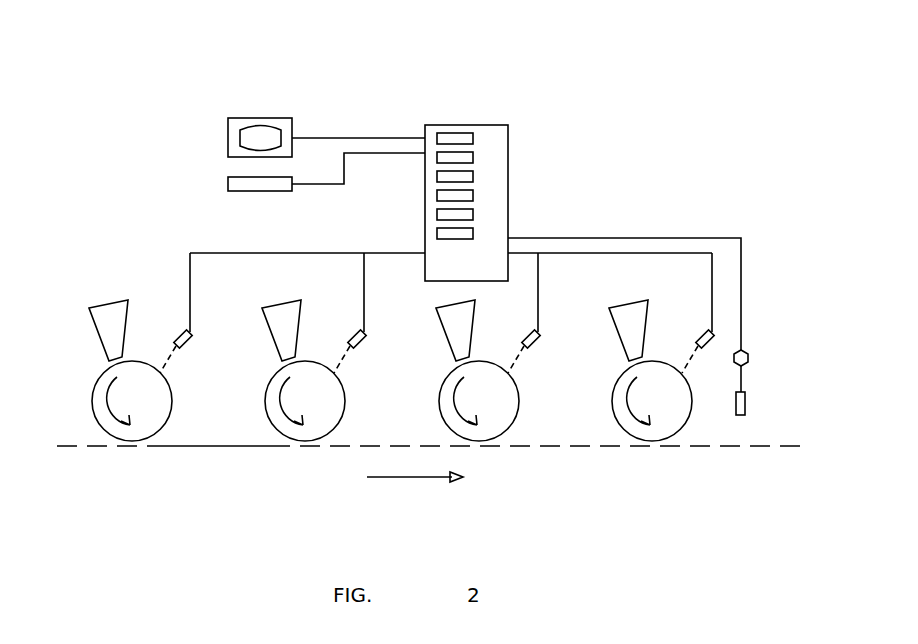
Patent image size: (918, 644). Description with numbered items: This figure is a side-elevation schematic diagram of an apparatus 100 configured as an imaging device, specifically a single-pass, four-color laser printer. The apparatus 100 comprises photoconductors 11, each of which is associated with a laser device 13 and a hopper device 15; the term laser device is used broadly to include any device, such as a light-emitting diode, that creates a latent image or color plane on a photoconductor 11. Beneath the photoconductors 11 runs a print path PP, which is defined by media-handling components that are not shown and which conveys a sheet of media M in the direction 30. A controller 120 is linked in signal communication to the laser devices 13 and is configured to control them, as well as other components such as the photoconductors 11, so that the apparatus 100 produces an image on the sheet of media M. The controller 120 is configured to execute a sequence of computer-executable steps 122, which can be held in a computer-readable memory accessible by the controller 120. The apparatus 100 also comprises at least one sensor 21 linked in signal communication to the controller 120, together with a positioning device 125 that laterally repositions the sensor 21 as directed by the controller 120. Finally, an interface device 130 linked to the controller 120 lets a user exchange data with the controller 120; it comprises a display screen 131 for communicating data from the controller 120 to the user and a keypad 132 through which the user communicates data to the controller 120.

The apparatus 100 is at (698, 183).
The controller 120 is at (462, 203).
The sequence of computer-executable steps 122 is at (437, 158).
The interface device 130 is at (228, 138).
The display screen 131 is at (236, 118).
The keypad 132 is at (228, 184).
The photoconductor 11 is at (93, 405).
The laser device 13 is at (181, 332).
The hopper device 15 is at (106, 308).
The positioning device 125 is at (748, 358).
The sensor 21 is at (745, 403).
The direction 30 is at (405, 479).
The sheet of media M is at (220, 449).
The print path PP is at (573, 449).